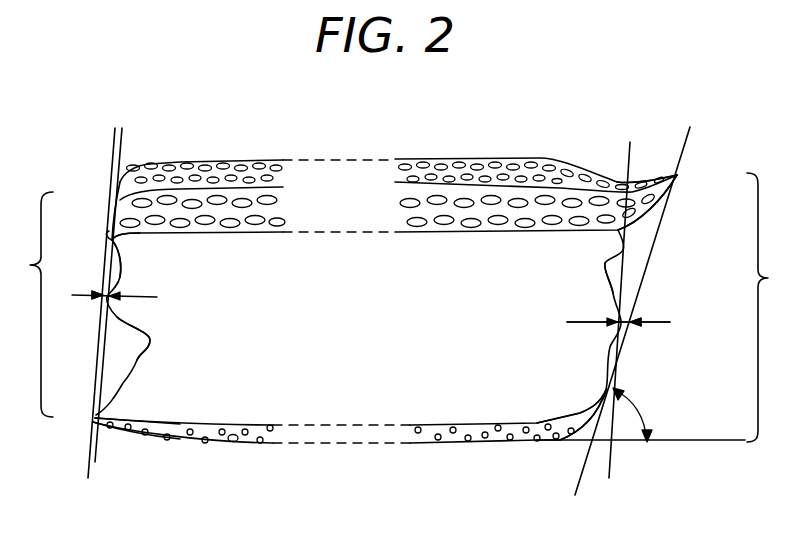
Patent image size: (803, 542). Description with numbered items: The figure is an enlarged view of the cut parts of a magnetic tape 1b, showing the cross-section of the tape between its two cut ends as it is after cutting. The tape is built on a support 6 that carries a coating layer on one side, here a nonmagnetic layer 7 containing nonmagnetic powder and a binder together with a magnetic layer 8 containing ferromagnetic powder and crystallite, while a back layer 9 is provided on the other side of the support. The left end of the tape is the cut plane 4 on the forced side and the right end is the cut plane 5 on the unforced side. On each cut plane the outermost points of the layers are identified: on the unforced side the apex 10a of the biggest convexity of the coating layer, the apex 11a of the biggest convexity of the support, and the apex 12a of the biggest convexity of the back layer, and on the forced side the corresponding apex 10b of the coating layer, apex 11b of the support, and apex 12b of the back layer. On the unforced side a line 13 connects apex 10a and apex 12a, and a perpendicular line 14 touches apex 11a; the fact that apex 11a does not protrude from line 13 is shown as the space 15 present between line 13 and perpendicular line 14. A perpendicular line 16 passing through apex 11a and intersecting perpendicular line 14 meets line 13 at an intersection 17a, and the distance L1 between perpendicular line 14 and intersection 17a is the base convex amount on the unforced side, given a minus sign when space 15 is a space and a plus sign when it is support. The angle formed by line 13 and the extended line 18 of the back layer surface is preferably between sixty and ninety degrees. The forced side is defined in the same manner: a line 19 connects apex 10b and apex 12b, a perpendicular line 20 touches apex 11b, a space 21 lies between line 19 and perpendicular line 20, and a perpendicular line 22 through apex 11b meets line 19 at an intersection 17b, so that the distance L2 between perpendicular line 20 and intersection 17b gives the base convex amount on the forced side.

The magnetic tape 1b is at (394, 184).
The cut plane on the forced side 4 is at (31, 304).
The cut plane on the unforced side 5 is at (768, 307).
The support 6 is at (349, 428).
The nonmagnetic layer 7 is at (397, 212).
The magnetic layer 8 is at (283, 173).
The back layer 9 is at (257, 433).
The apex of the biggest convexity of the coating layer 10a is at (676, 174).
The apex of the biggest convexity of the coating layer 10b is at (111, 237).
The apex of the biggest convexity of the support 11a is at (613, 330).
The apex of the biggest convexity of the support 11b is at (118, 282).
The apex of the biggest convexity of the back layer 12a is at (597, 412).
The apex of the biggest convexity of the back layer 12b is at (97, 416).
The line connecting apexes 13 is at (690, 136).
The perpendicular line 14 is at (627, 152).
The space 15 is at (619, 283).
The perpendicular line 16 is at (580, 321).
The intersection 17a is at (630, 328).
The intersection 17b is at (101, 297).
The extended line of the back layer surface 18 is at (690, 442).
The line connecting apexes 19 is at (113, 147).
The perpendicular line 20 is at (122, 142).
The space 21 is at (112, 270).
The perpendicular line 22 is at (143, 297).
The distance L1 is at (634, 303).
The distance L2 is at (106, 291).